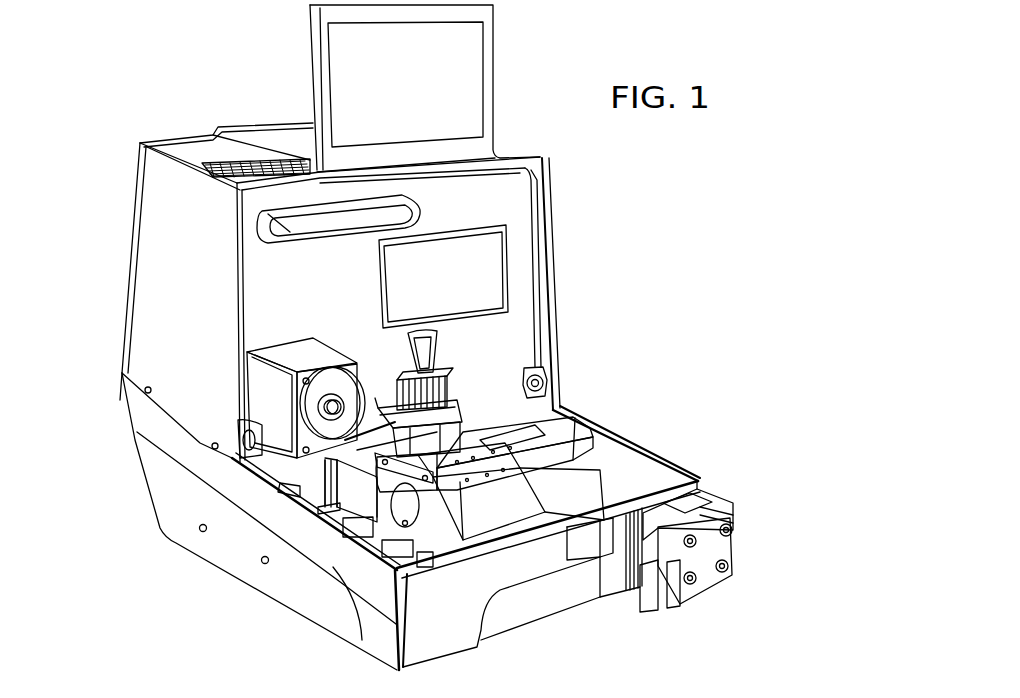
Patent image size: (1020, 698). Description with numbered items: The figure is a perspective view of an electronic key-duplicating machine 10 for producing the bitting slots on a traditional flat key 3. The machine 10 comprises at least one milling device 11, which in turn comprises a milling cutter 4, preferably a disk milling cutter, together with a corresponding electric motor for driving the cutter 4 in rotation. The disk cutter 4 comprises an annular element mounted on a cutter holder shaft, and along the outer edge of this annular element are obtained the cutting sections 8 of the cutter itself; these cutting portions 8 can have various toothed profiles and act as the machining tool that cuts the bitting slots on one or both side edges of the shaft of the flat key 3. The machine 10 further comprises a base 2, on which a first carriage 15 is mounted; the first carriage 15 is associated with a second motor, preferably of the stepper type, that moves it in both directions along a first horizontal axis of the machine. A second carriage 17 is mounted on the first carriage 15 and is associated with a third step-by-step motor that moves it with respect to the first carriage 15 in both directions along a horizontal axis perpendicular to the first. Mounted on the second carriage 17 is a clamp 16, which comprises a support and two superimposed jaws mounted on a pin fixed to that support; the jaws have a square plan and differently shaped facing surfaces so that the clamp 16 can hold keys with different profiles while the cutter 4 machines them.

The electronic key-duplicating machine 10 is at (118, 172).
The milling device 11 is at (272, 385).
The cutting sections 8 is at (357, 395).
The milling cutter 4 is at (317, 422).
The flat key 3 is at (380, 397).
The clamp 16 is at (443, 384).
The second carriage 17 is at (546, 432).
The base 2 is at (360, 492).
The first carriage 15 is at (483, 502).